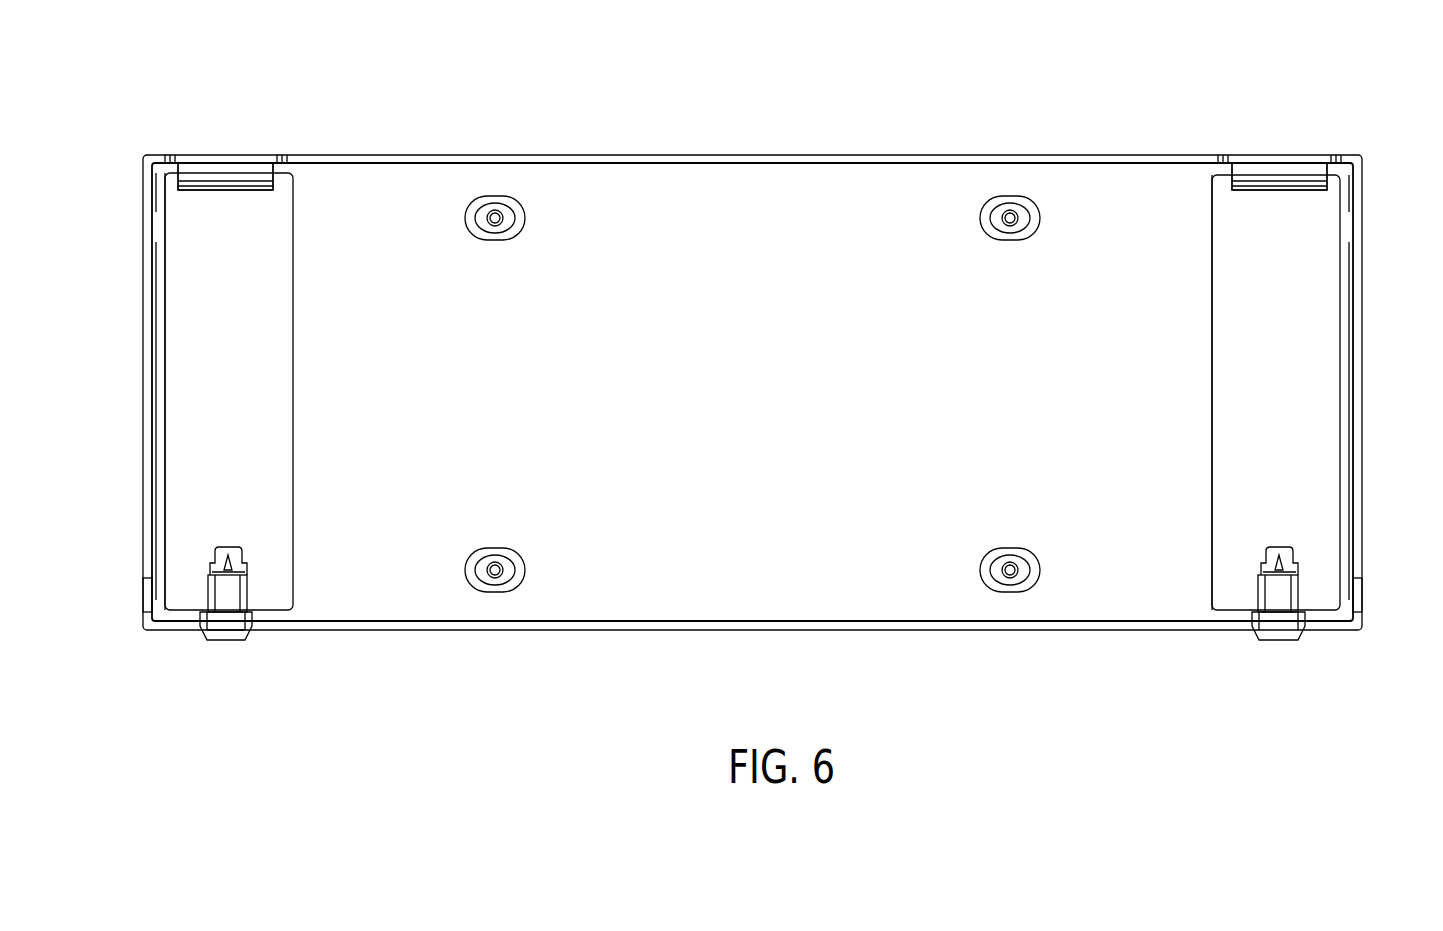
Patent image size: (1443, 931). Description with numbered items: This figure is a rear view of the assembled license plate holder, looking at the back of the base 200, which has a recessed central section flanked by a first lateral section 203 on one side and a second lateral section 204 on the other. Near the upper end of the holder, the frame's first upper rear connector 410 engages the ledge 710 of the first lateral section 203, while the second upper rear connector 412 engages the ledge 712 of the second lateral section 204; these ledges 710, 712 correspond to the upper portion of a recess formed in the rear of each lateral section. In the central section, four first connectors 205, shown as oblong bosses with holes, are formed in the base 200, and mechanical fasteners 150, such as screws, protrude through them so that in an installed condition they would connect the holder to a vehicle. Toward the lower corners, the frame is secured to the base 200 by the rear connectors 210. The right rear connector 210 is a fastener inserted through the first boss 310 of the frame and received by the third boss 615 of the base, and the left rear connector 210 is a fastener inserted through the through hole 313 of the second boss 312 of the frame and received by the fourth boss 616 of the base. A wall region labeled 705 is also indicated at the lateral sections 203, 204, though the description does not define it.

The base 200 is at (698, 422).
The first lateral section 203 is at (1248, 422).
The second lateral section 204 is at (207, 367).
The first connectors 205 is at (522, 206).
The mechanical fasteners 150 is at (494, 214).
The rear connectors 210 is at (212, 553).
The second boss 312 is at (243, 641).
The first boss 310 is at (1288, 642).
The through hole 313 is at (221, 648).
The third boss 615 is at (1280, 595).
The fourth boss 616 is at (225, 592).
The first upper rear connector 410 is at (1278, 175).
The second upper rear connector 412 is at (222, 175).
The ledge 710 is at (1228, 172).
The ledge 712 is at (283, 160).
The recess side wall 705 is at (165, 247).